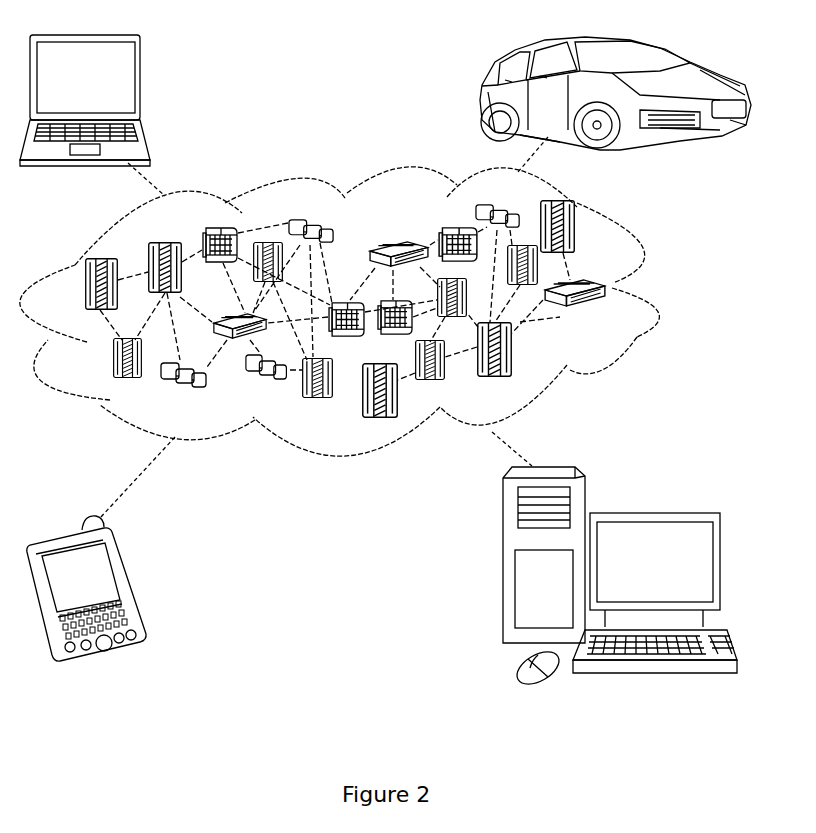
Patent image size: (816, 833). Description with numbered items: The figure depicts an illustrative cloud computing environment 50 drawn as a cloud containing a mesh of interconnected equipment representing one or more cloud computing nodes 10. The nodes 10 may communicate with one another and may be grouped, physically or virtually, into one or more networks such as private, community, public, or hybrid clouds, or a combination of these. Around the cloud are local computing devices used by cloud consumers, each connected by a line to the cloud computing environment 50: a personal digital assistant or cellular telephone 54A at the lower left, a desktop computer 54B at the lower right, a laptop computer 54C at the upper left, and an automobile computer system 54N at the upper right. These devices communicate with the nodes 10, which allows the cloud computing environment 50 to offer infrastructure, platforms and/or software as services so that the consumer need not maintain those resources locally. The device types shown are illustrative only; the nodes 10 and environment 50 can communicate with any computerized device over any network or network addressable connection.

The laptop computer 54C is at (140, 86).
The automobile computer system 54N is at (480, 97).
The cloud computing environment 50 is at (652, 292).
The cloud computing nodes 10 is at (612, 318).
The personal digital assistant or cellular telephone 54A is at (130, 586).
The desktop computer 54B is at (652, 512).